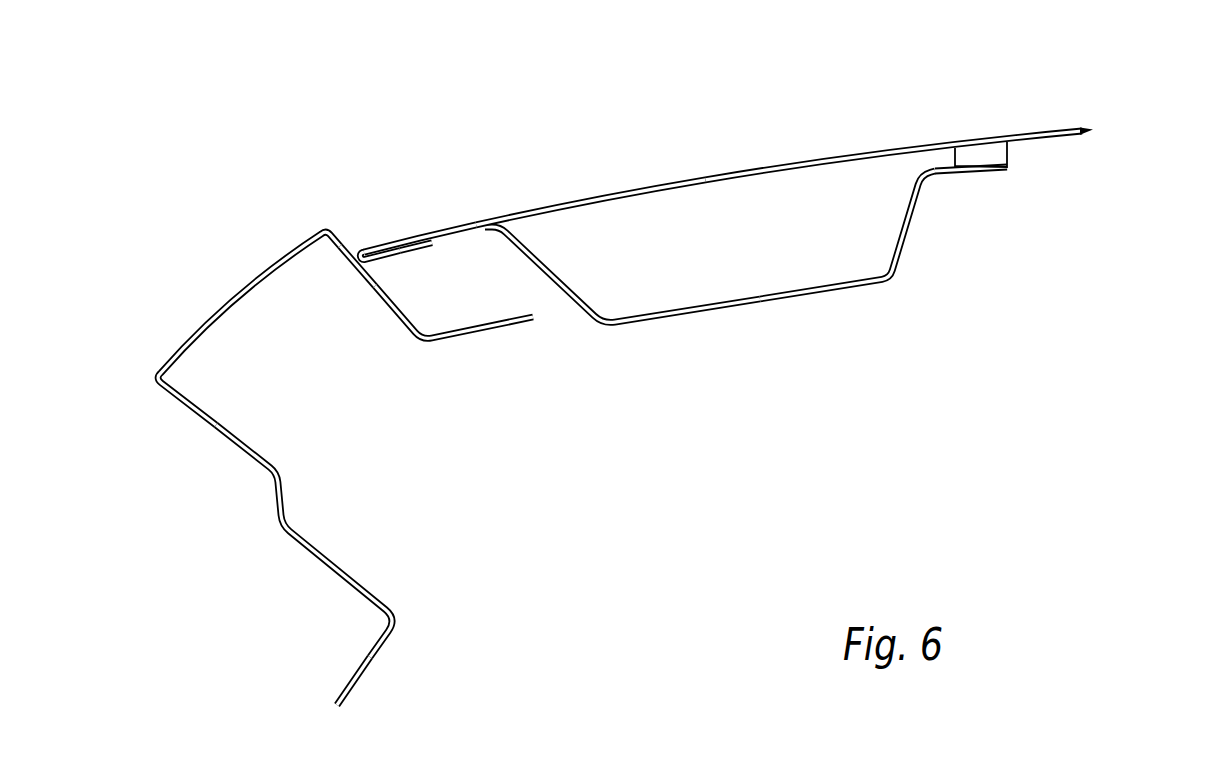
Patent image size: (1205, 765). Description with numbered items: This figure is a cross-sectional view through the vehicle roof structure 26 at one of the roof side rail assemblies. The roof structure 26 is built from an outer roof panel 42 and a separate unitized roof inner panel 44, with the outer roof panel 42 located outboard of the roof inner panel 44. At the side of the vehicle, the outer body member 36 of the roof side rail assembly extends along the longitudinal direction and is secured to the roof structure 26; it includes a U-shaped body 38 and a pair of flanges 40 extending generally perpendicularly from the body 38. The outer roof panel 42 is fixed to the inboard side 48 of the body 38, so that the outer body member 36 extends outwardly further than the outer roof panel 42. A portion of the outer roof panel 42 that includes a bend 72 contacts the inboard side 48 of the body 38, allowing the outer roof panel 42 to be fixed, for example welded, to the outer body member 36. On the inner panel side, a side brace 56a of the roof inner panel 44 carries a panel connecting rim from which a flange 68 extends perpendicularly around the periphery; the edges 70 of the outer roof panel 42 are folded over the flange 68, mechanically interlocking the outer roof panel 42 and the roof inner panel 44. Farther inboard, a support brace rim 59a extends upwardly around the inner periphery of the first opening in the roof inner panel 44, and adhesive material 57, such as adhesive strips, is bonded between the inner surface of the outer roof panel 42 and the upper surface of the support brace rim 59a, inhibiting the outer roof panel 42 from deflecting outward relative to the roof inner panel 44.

The vehicle roof structure 26 is at (700, 138).
The outer body member 36 is at (222, 480).
The U-shaped body 38 is at (218, 302).
The flange 40 is at (477, 333).
The outer roof panel 42 is at (769, 168).
The roof inner panel 44 is at (798, 278).
The inboard side 48 is at (361, 257).
The side brace 56a is at (872, 285).
The adhesive material 57 is at (998, 155).
The support brace rim 59a is at (993, 177).
The flange 68 is at (434, 189).
The edge 70 is at (415, 249).
The bend 72 is at (360, 259).